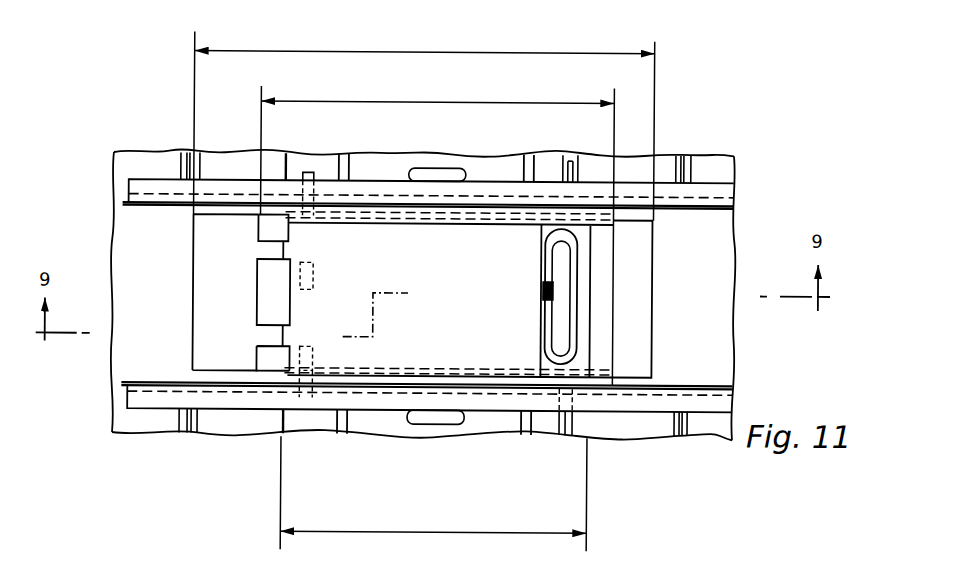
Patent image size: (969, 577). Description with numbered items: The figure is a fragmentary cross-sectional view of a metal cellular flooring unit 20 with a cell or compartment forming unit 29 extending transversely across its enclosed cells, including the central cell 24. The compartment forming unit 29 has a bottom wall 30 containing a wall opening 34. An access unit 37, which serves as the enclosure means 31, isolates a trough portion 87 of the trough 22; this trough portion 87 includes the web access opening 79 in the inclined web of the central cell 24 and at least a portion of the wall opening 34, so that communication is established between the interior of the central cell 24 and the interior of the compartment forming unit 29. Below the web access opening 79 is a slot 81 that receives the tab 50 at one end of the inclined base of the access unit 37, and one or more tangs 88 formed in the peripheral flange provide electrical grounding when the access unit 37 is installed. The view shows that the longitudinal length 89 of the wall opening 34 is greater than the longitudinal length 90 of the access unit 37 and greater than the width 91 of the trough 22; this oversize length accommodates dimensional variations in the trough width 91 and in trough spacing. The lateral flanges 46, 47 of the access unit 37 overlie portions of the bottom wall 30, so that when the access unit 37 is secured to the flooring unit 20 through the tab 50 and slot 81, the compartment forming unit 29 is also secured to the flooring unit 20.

The metal cellular flooring unit 20 is at (669, 150).
The trough 22 is at (503, 422).
The central cell 24 is at (610, 446).
The cell or compartment forming unit 29 is at (746, 200).
The bottom wall 30 is at (700, 366).
The enclosure means 31 is at (232, 268).
The wall opening 34 is at (628, 335).
The access unit 37 is at (257, 294).
The lateral flange 46 is at (383, 210).
The lateral flange 47 is at (308, 400).
The tab 50 is at (538, 296).
The web access opening 79 is at (563, 290).
The slot 81 is at (543, 288).
The trough portion 87 is at (425, 342).
The tang 88 is at (262, 218).
The longitudinal length 89 is at (406, 52).
The longitudinal length 90 is at (416, 102).
The width 91 is at (438, 532).